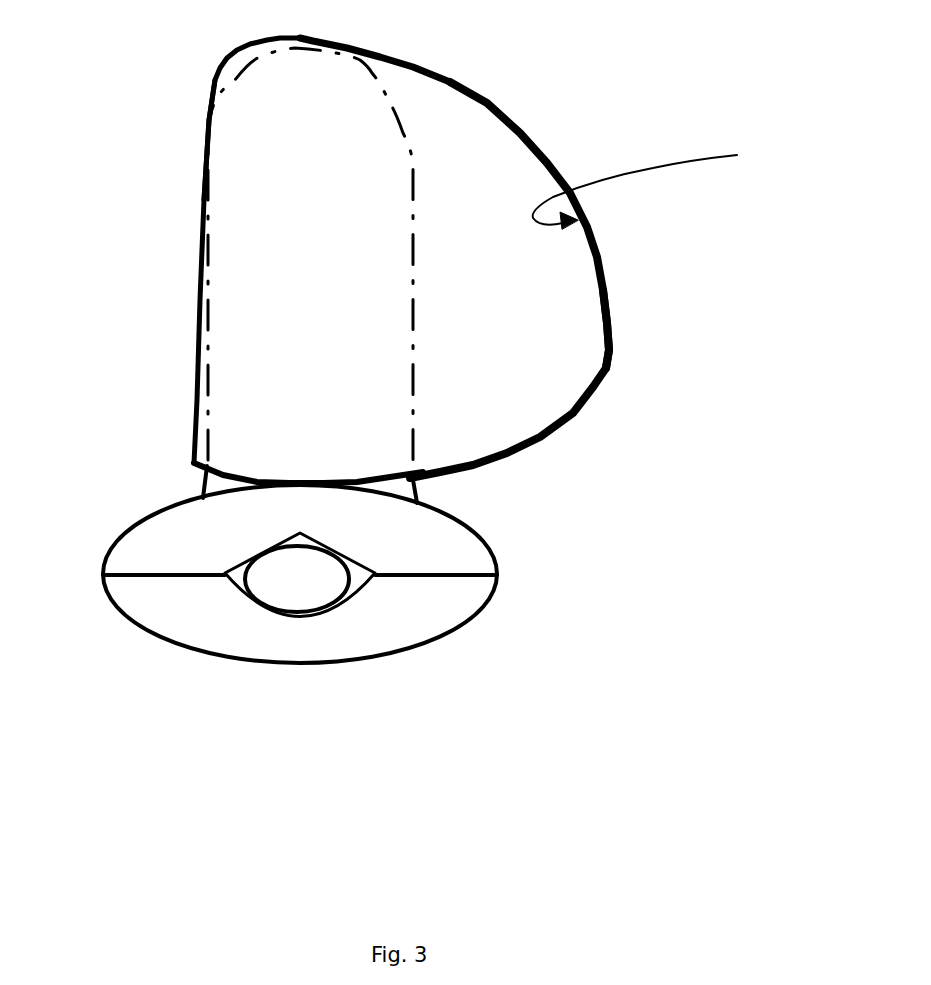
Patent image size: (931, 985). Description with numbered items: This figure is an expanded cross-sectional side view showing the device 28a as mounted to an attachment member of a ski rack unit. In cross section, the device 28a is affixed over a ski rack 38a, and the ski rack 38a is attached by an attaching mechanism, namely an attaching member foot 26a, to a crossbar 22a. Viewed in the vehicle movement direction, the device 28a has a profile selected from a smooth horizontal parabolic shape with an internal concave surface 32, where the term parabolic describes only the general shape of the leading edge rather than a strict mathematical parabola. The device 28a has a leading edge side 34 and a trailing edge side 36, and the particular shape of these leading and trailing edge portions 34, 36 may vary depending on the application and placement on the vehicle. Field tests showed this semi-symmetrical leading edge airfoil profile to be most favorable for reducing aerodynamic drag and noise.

The device 28a is at (543, 110).
The trailing edge side 36 is at (213, 105).
The ski rack 38a is at (298, 183).
The internal concave surface 32 is at (658, 184).
The leading edge side 34 is at (613, 270).
The attaching member foot 26a is at (203, 613).
The crossbar 22a is at (337, 583).